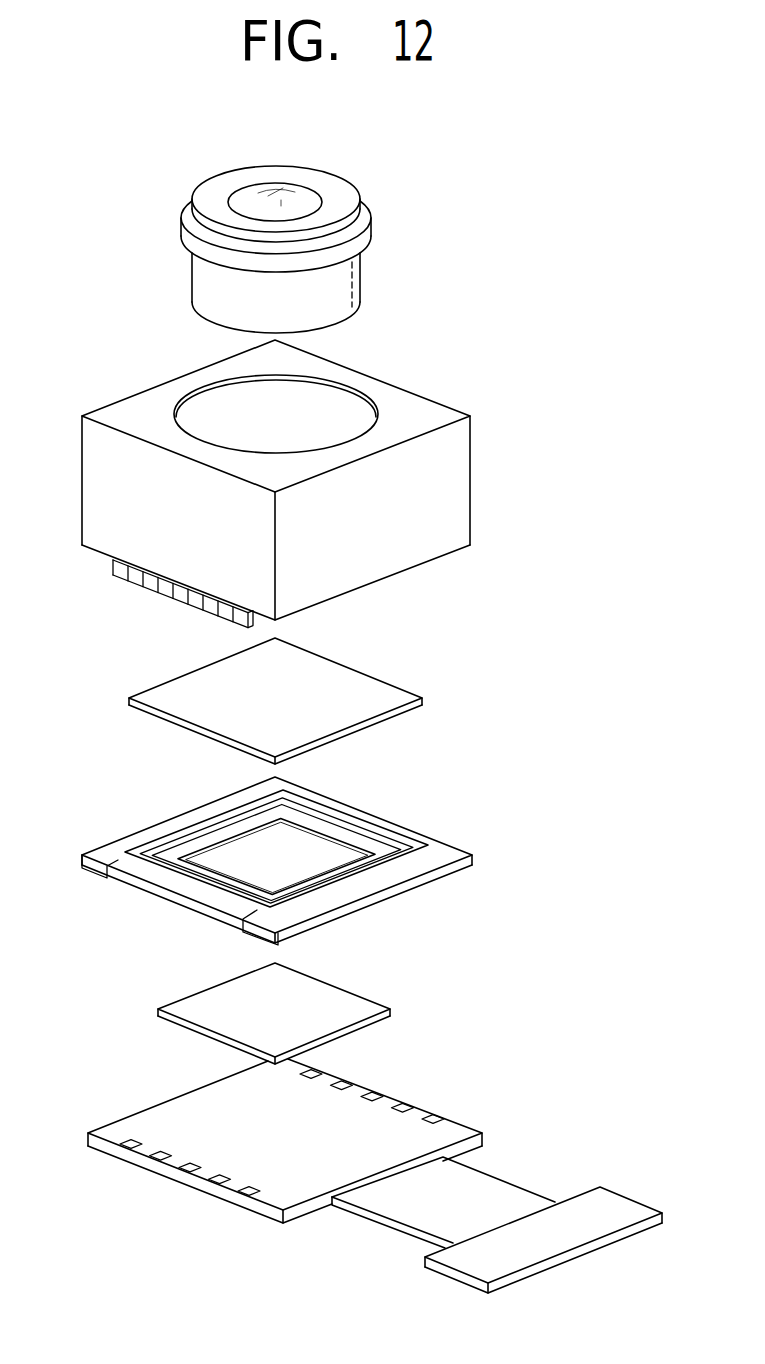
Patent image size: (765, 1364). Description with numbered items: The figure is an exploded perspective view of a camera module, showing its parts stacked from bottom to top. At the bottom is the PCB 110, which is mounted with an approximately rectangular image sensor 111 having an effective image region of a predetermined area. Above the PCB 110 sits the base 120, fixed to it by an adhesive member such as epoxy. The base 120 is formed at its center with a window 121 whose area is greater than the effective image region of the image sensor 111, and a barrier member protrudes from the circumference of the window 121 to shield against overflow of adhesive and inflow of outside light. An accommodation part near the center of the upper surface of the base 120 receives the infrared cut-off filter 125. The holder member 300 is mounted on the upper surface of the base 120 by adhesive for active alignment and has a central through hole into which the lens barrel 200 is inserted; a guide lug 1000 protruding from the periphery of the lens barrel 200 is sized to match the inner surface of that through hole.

The lens barrel 200 is at (339, 192).
The guide lug 1000 is at (363, 236).
The holder member 300 is at (463, 465).
The infrared cut-off filter 125 is at (347, 683).
The base 120 is at (437, 847).
The window 121 is at (210, 848).
The image sensor 111 is at (362, 1005).
The PCB 110 is at (452, 1133).